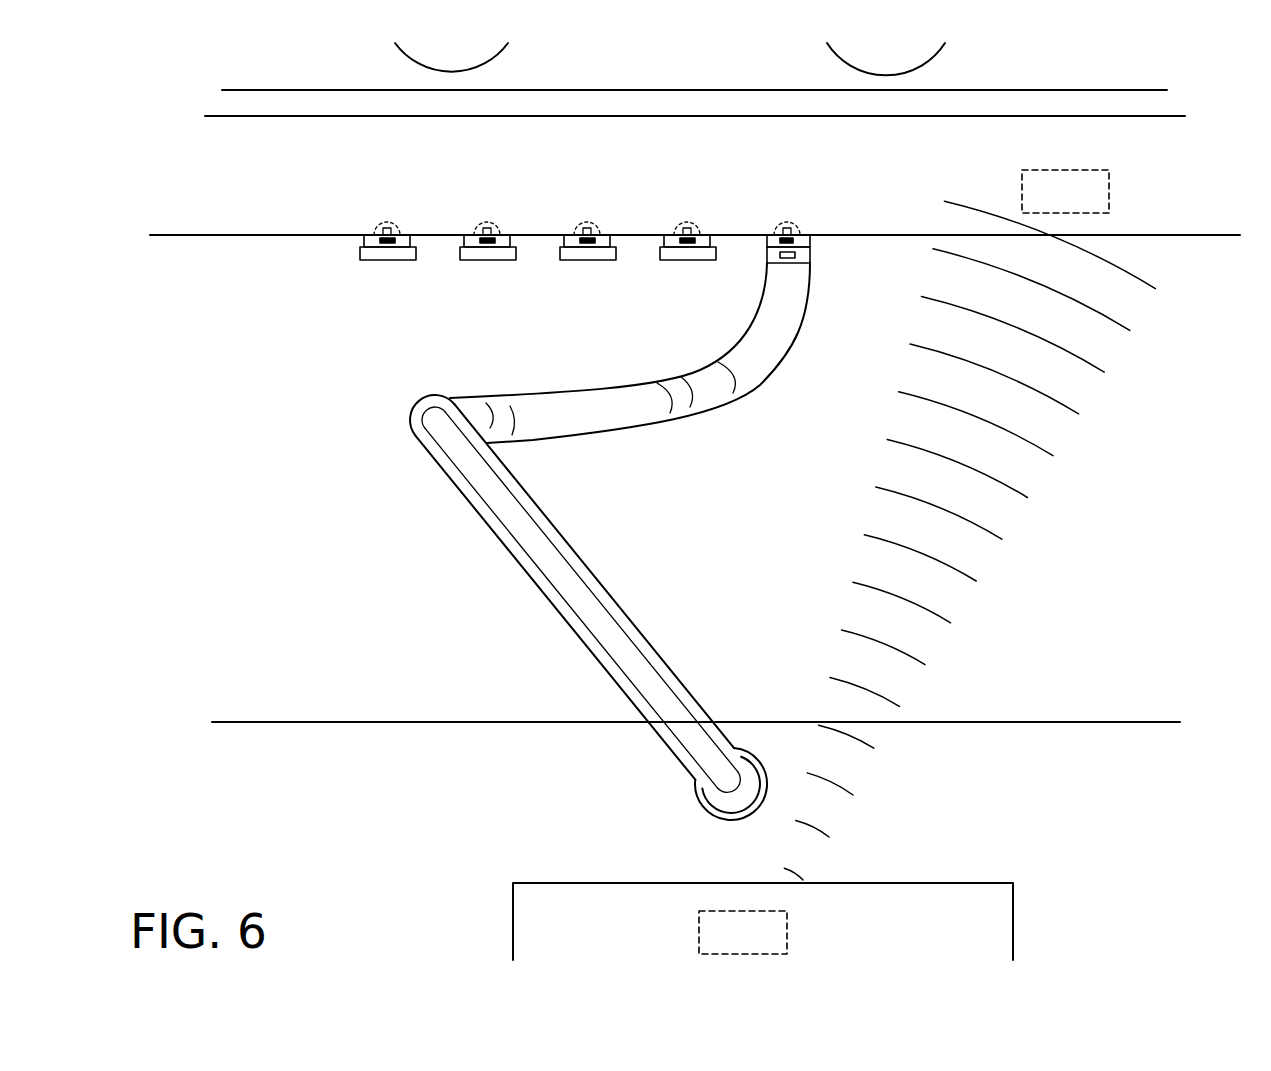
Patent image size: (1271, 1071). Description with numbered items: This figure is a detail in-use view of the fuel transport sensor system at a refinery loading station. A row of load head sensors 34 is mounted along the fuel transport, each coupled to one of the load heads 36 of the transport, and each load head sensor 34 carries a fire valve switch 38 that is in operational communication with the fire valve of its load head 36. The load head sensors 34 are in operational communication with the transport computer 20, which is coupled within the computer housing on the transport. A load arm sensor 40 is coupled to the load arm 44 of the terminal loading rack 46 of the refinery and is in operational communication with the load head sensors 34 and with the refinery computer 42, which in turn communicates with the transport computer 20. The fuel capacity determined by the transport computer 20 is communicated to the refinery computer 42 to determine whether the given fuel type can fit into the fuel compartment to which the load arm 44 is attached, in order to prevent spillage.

The transport computer 20 is at (1095, 192).
The load head sensors 34 is at (783, 238).
The load heads 36 is at (585, 255).
The fire valve switch 38 is at (388, 234).
The load arm sensor 40 is at (786, 260).
The refinery computer 42 is at (772, 933).
The load arm 44 is at (480, 483).
The terminal loading rack 46 is at (1096, 757).